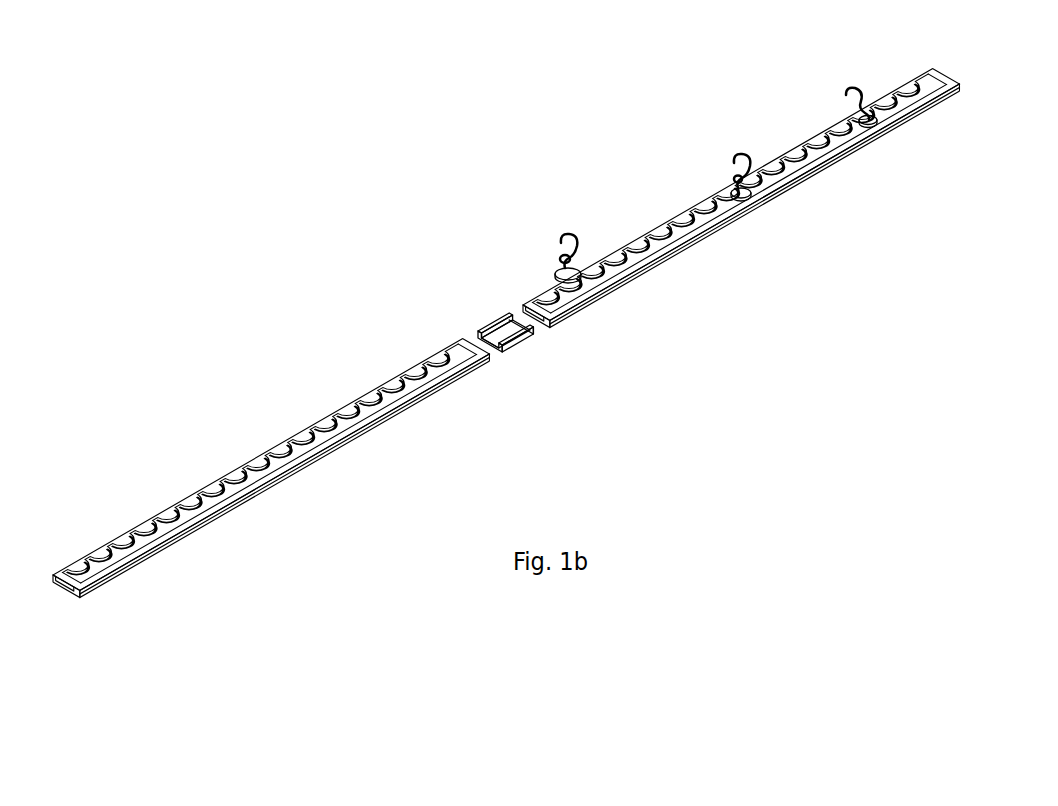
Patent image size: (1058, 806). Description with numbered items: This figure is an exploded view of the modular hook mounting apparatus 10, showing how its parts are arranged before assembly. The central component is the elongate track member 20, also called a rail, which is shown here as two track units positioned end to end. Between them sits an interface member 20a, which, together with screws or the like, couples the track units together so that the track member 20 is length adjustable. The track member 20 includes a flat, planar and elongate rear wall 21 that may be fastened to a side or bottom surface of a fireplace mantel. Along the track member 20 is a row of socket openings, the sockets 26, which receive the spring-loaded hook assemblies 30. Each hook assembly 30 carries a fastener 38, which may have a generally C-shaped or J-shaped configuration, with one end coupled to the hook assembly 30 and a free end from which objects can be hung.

The modular hook mounting apparatus 10 is at (314, 227).
The track member 20 is at (263, 497).
The interface member 20a is at (522, 338).
The rear wall 21 is at (72, 585).
The sockets 26 is at (352, 407).
The spring-loaded hook assembly 30 is at (520, 259).
The fastener 38 is at (570, 235).